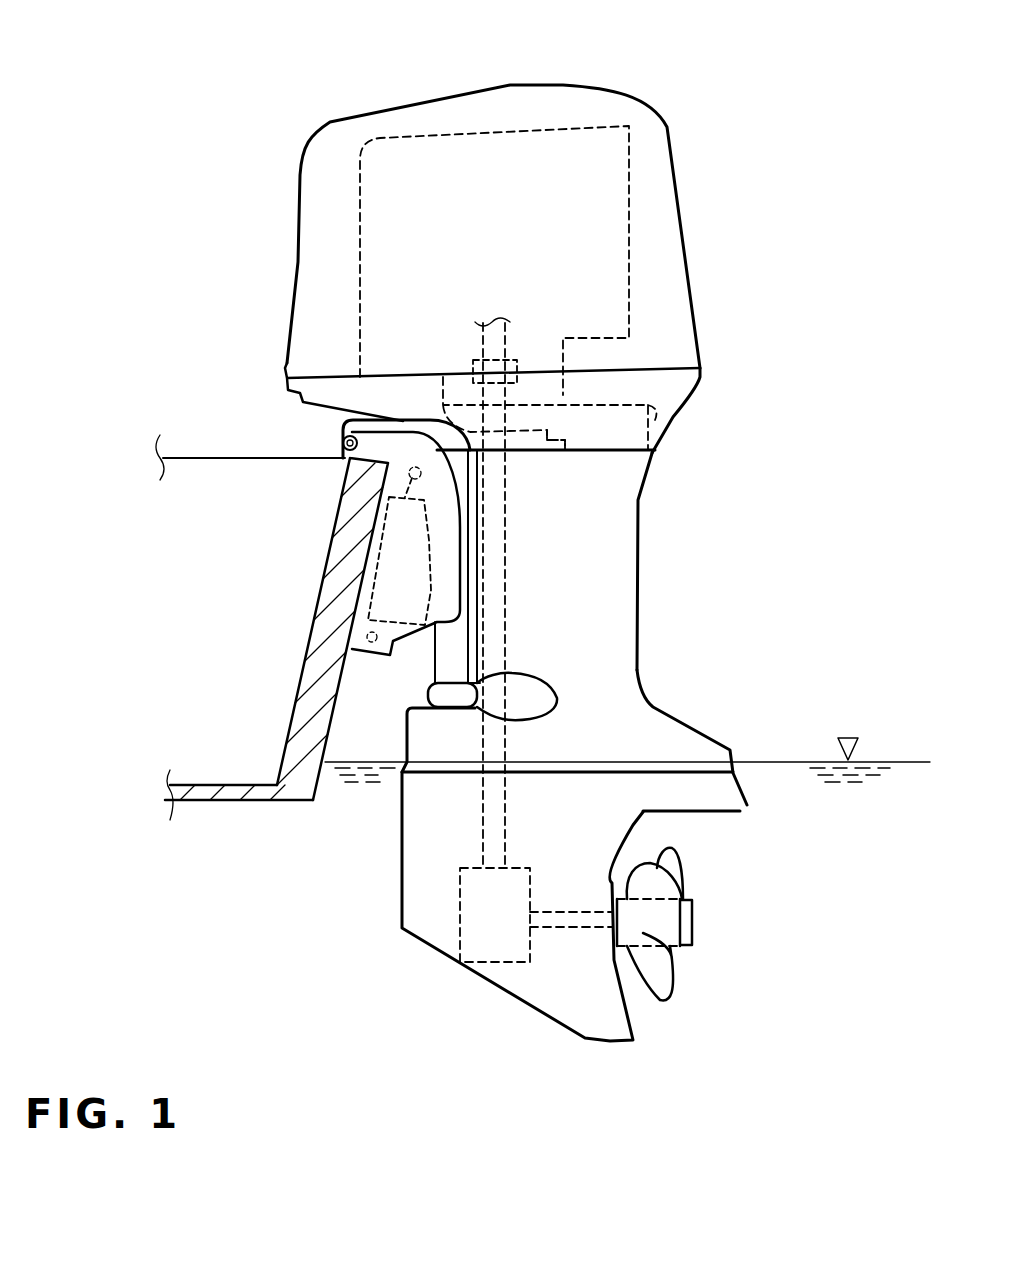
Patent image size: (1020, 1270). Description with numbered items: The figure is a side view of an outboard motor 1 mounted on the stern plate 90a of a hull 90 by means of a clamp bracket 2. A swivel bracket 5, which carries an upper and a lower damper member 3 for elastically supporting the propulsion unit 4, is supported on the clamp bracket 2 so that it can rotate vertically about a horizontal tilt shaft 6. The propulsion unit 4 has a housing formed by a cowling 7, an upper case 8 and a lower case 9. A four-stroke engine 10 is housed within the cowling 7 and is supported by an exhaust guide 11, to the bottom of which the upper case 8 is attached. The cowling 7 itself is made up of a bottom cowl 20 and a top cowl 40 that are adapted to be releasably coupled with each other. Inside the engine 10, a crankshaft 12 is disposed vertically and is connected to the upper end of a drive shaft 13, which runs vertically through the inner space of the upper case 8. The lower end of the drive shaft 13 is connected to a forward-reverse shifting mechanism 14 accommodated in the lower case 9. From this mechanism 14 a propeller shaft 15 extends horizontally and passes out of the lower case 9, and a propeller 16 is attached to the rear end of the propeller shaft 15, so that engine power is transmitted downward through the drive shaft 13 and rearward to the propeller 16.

The outboard motor 1 is at (666, 92).
The clamp bracket 2 is at (405, 632).
The damper member 3 is at (557, 450).
The propulsion unit 4 is at (639, 558).
The swivel bracket 5 is at (432, 686).
The tilt shaft 6 is at (343, 443).
The cowling 7 is at (697, 313).
The upper case 8 is at (640, 682).
The lower case 9 is at (403, 882).
The four-stroke engine 10 is at (629, 232).
The exhaust guide 11 is at (652, 415).
The crankshaft 12 is at (508, 330).
The drive shaft 13 is at (505, 652).
The forward-reverse shifting mechanism 14 is at (530, 880).
The propeller shaft 15 is at (572, 928).
The propeller 16 is at (672, 990).
The bottom cowl 20 is at (693, 390).
The top cowl 40 is at (673, 158).
The hull 90 is at (235, 800).
The stern plate 90a is at (313, 675).